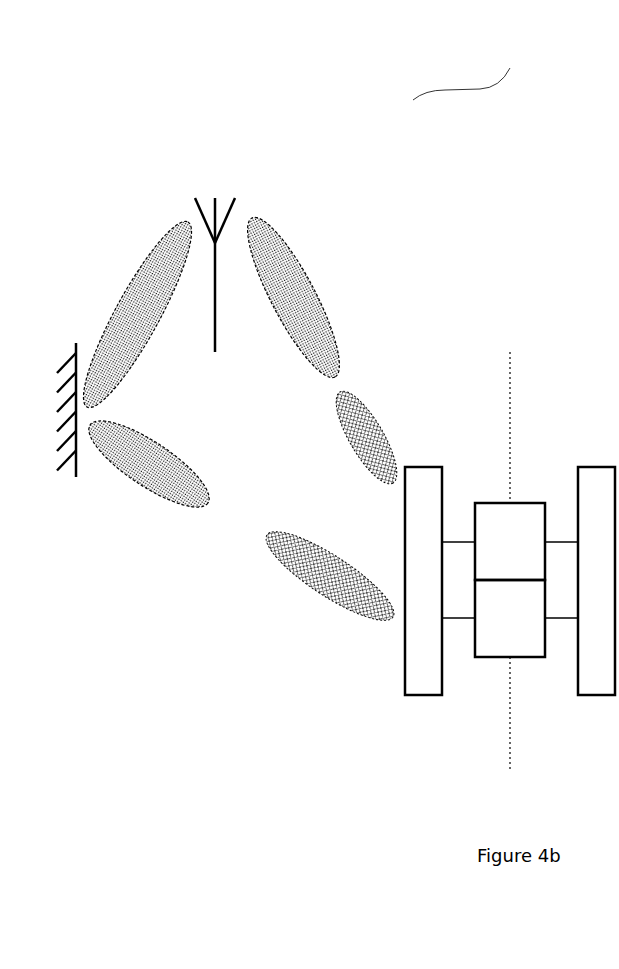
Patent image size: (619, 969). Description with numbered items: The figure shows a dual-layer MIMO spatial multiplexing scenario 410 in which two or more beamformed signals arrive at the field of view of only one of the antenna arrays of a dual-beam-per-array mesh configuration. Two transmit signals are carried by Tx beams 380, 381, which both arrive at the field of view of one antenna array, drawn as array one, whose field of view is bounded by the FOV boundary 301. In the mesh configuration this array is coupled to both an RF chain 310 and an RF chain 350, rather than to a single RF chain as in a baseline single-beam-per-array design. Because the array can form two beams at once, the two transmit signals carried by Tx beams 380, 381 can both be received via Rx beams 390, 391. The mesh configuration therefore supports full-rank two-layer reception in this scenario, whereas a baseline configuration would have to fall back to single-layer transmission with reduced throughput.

The Tx beam 380 is at (138, 314).
The Tx beam 381 is at (293, 297).
The Rx beam 391 is at (355, 437).
The Rx beam 390 is at (330, 578).
The RF chain 310 is at (510, 556).
The FOV boundary 301 is at (508, 417).
The RF chain 350 is at (539, 713).
The dual-layer MIMO SM scenario 410 is at (477, 66).